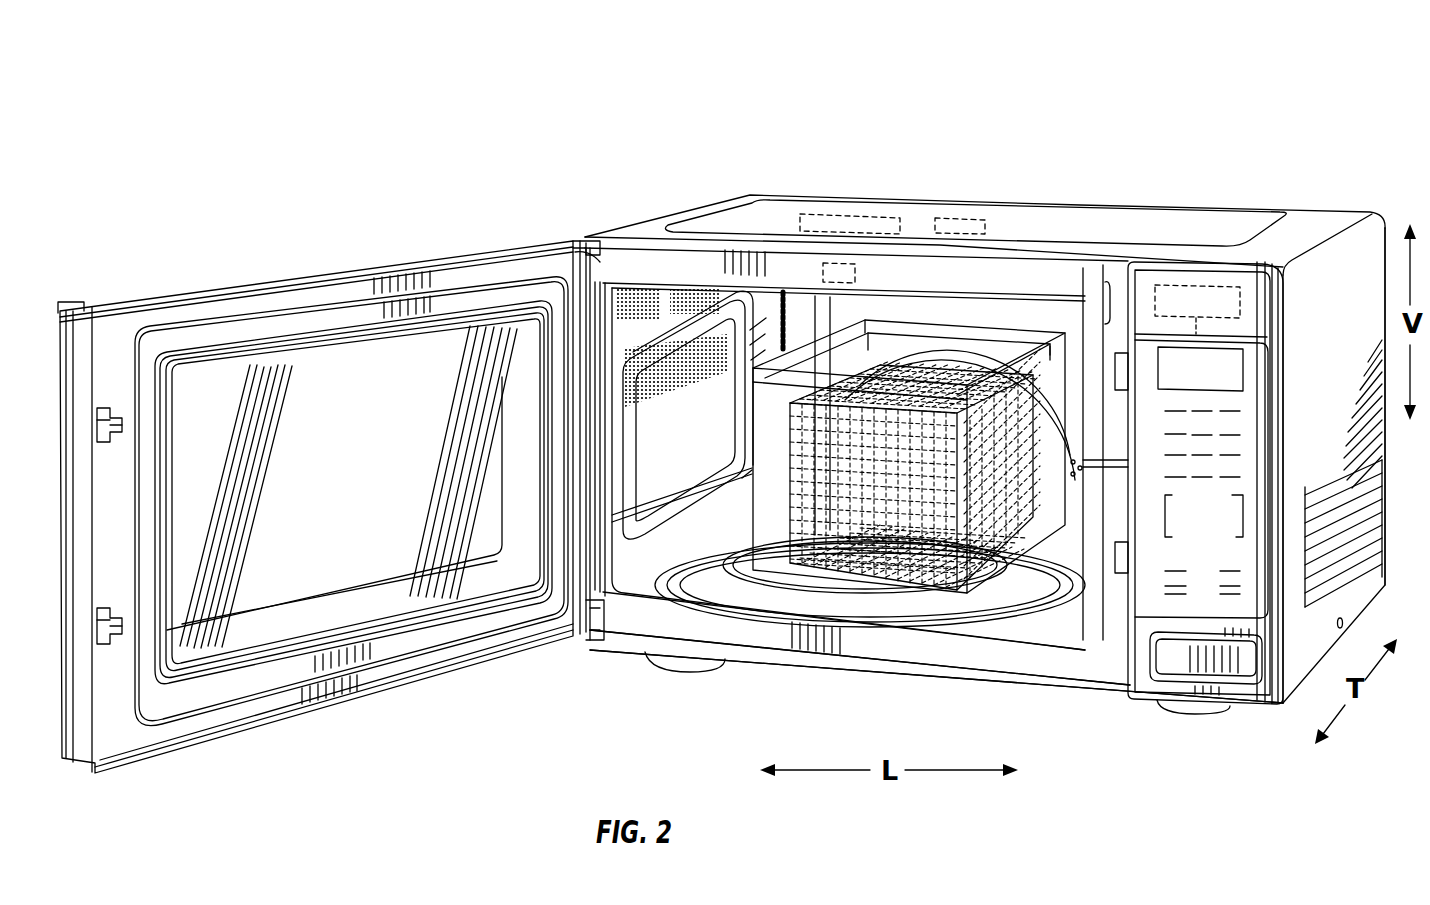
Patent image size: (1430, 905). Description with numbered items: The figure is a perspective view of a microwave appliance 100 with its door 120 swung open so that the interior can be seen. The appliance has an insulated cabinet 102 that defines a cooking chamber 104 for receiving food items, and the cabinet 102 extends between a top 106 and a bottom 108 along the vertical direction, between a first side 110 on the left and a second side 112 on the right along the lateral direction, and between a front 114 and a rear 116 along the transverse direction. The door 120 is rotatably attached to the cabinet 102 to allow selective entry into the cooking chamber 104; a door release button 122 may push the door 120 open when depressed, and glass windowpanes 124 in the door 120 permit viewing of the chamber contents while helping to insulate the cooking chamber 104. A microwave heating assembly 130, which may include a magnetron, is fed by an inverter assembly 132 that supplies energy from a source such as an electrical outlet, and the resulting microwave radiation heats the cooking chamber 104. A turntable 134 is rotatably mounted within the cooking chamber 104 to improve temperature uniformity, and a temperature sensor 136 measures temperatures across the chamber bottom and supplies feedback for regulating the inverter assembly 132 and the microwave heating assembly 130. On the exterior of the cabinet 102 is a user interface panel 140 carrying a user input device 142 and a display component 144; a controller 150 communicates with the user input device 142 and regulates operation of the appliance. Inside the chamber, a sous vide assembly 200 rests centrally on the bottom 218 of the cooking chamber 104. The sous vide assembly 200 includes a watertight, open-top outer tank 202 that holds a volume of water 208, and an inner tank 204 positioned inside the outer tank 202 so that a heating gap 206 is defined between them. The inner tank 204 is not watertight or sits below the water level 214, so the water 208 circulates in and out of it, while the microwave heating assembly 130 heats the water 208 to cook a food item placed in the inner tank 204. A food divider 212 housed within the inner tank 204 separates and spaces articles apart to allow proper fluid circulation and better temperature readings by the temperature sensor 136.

The microwave appliance 100 is at (1315, 100).
The cabinet 102 is at (782, 211).
The cooking chamber 104 is at (912, 310).
The top 106 is at (1190, 210).
The bottom 108 is at (1098, 707).
The first side 110 is at (638, 212).
The second side 112 is at (1318, 512).
The front 114 is at (1025, 662).
The rear 116 is at (1360, 190).
The door 120 is at (331, 528).
The door release button 122 is at (1240, 675).
The glass windowpanes 124 is at (372, 552).
The microwave heating assembly 130 is at (822, 210).
The inverter assembly 132 is at (953, 215).
The turntable 134 is at (900, 592).
The temperature sensor 136 is at (822, 268).
The user interface panel 140 is at (1234, 432).
The user input device 142 is at (1232, 497).
The display component 144 is at (1238, 362).
The controller 150 is at (1225, 285).
The sous vide assembly 200 is at (745, 505).
The outer tank 202 is at (870, 442).
The inner tank 204 is at (1042, 432).
The heating gap 206 is at (866, 582).
The water 208 is at (1050, 512).
The food divider 212 is at (805, 473).
The water level 214 is at (1003, 322).
The bottom of cooking chamber 218 is at (722, 583).